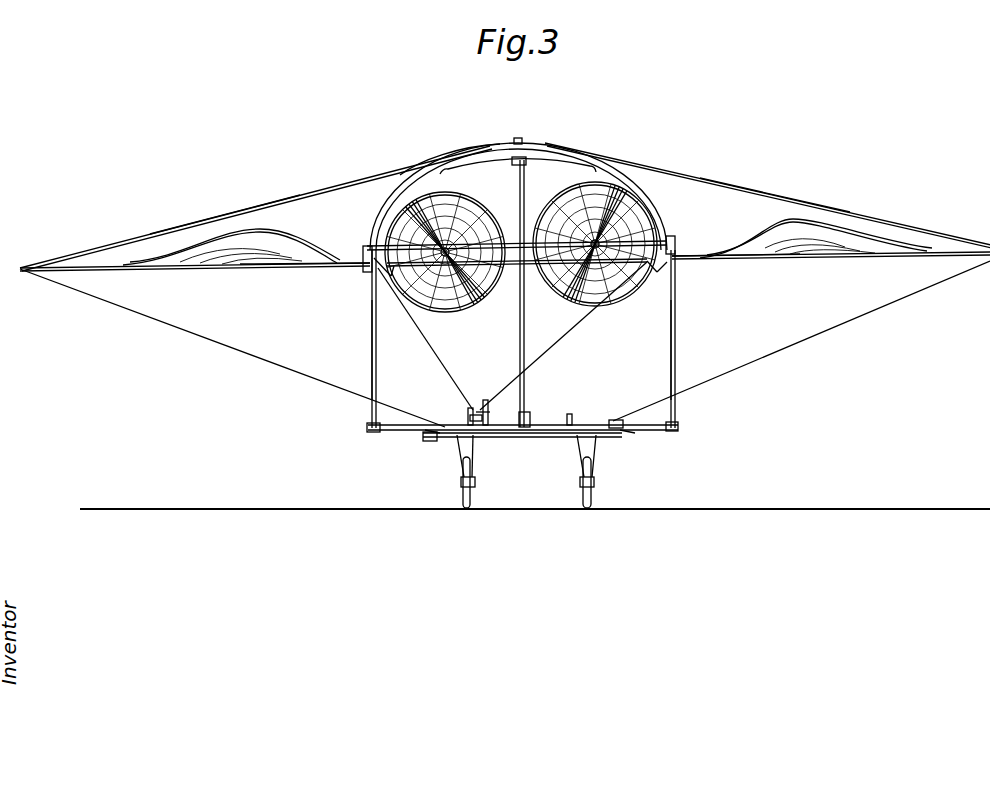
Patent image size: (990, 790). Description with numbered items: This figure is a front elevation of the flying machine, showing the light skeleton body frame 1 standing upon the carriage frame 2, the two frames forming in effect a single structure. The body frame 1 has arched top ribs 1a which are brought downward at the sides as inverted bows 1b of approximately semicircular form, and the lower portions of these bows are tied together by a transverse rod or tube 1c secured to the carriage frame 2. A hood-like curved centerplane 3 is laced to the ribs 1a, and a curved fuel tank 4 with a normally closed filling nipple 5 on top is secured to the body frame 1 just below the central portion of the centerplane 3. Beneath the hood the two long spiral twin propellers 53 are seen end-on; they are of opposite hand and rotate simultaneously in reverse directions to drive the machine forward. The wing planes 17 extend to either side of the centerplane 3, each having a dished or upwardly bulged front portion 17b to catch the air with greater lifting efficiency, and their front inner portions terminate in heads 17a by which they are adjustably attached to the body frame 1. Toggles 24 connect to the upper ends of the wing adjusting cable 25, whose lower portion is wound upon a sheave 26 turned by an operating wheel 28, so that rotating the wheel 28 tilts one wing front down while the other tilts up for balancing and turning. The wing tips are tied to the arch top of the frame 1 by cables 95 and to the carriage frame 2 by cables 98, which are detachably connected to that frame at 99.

The body frame 1 is at (528, 222).
The curved top ribs 1a is at (370, 436).
The inverted bows 1b is at (372, 340).
The transverse rod or tube 1c is at (655, 430).
The carriage frame 2 is at (465, 487).
The centerplane 3 is at (410, 177).
The fuel tank 4 is at (553, 157).
The filling nipple 5 is at (521, 142).
The wing planes 17 is at (72, 272).
The heads 17a is at (352, 267).
The upwardly bulged portion 17b is at (277, 249).
The toggles 24 is at (534, 275).
The wing adjusting cable 25 is at (423, 340).
The sheave 26 is at (472, 406).
The operating wheel 28 is at (490, 413).
The long spiral twin propellers 53 is at (466, 310).
The cables 95 is at (290, 196).
The cables 98 is at (328, 387).
The detachable connection 99 is at (428, 437).